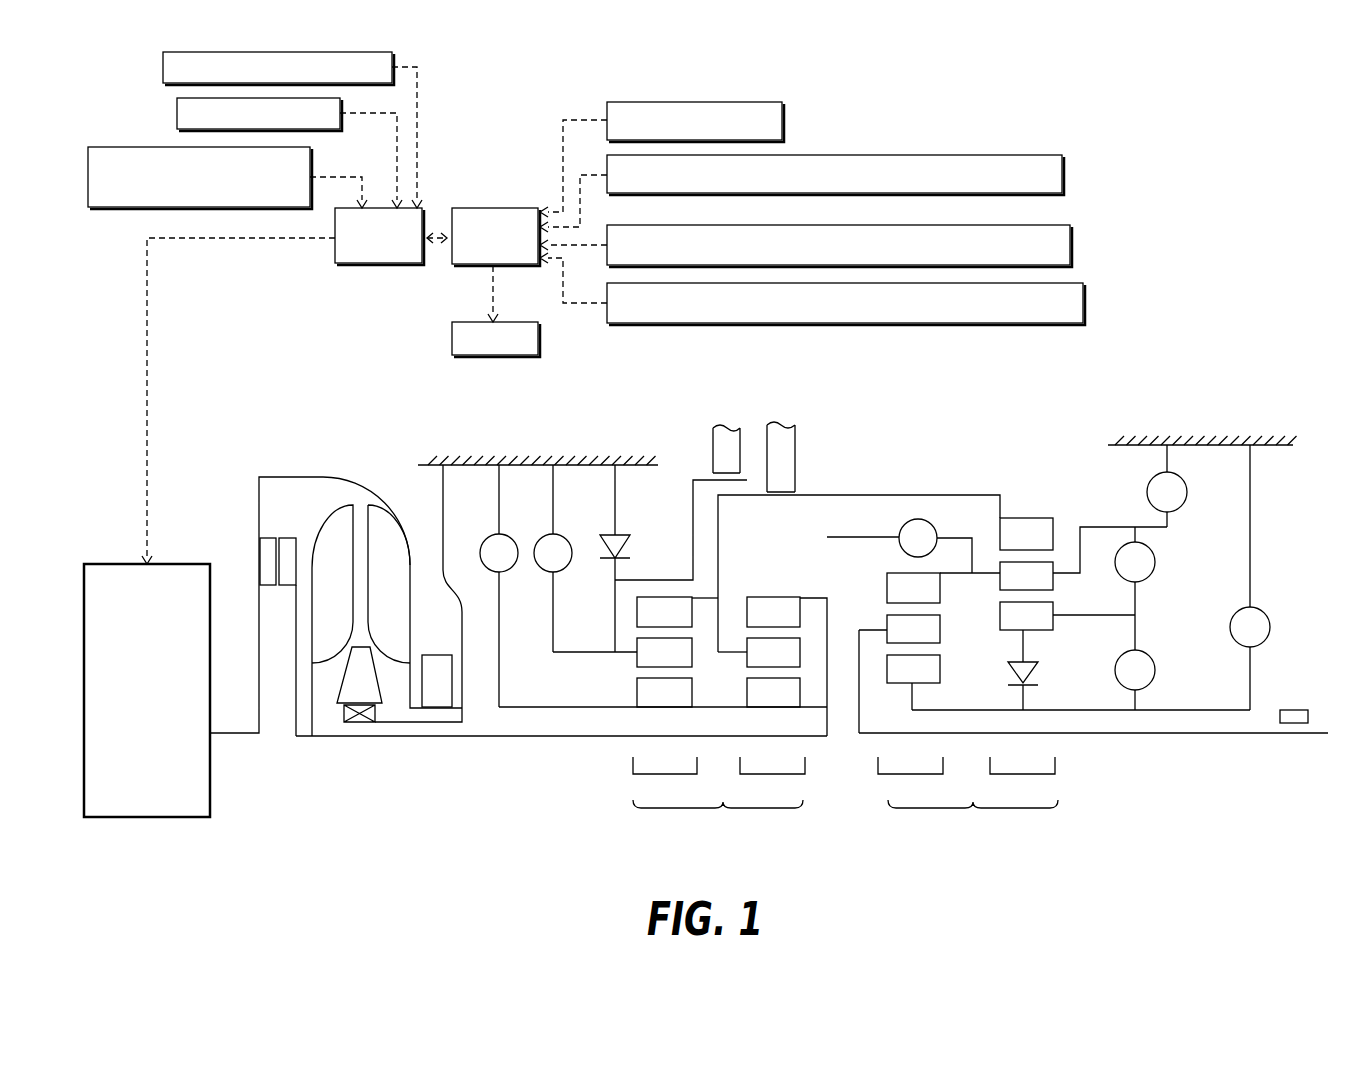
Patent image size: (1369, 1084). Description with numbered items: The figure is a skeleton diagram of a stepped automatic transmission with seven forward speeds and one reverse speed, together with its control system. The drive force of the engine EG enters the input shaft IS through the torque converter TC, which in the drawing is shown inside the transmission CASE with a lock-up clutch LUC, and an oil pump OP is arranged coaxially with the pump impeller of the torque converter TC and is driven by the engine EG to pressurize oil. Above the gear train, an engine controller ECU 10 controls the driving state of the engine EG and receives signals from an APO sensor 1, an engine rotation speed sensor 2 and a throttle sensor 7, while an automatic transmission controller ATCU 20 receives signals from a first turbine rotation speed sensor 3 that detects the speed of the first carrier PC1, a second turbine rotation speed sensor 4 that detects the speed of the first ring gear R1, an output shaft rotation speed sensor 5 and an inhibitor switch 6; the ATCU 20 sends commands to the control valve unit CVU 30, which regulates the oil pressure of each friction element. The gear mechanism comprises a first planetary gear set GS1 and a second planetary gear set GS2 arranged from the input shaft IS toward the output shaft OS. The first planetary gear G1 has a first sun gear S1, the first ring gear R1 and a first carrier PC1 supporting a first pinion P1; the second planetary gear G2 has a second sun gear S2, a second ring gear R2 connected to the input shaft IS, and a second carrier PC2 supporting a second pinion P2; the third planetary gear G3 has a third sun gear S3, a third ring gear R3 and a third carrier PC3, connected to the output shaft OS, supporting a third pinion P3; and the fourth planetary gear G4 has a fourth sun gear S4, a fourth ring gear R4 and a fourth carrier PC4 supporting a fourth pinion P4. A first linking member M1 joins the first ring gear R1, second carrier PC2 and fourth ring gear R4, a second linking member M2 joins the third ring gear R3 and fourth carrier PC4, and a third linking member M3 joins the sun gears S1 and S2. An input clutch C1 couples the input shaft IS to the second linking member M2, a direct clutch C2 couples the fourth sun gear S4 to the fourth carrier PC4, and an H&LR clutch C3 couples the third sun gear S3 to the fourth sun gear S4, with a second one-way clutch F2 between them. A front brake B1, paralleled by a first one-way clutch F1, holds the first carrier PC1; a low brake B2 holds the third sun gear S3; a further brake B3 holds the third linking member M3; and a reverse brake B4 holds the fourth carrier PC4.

The APO sensor 1 is at (177, 113).
The engine rotation speed sensor 2 is at (88, 175).
The first turbine rotation speed sensor 3 is at (1062, 175).
The second turbine rotation speed sensor 4 is at (1070, 245).
The output shaft rotation speed sensor 5 is at (1083, 303).
The inhibitor switch 6 is at (782, 122).
The throttle sensor 7 is at (163, 70).
The engine controller (ECU) 10 is at (373, 263).
The automatic transmission controller (ATCU) 20 is at (483, 208).
The control valve unit (CVU) 30 is at (463, 355).
The engine EG is at (185, 564).
The torque converter TC is at (354, 464).
The lock-up clutch LUC is at (282, 532).
The oil pump OP is at (440, 655).
The input shaft IS is at (460, 738).
The output shaft OS is at (1158, 735).
The transmission case CASE is at (515, 470).
The front brake B1 is at (553, 558).
The low brake B2 is at (1250, 577).
The 2346 brake B3 is at (499, 586).
The reverse brake B4 is at (1167, 486).
The input clutch C1 is at (899, 546).
The direct clutch C2 is at (1135, 588).
The H&LR clutch C3 is at (1135, 680).
The first one-way clutch F1 is at (626, 532).
The second one-way clutch F2 is at (1038, 668).
The first ring gear R1 is at (677, 612).
The second ring gear R2 is at (787, 666).
The third ring gear R3 is at (913, 588).
The fourth ring gear R4 is at (1026, 534).
The first pinion P1 is at (664, 652).
The second pinion P2 is at (773, 652).
The third pinion P3 is at (913, 629).
The fourth pinion P4 is at (1026, 576).
The first sun gear S1 is at (664, 692).
The second sun gear S2 is at (773, 692).
The third sun gear S3 is at (913, 682).
The fourth sun gear S4 is at (1067, 616).
The first carrier PC1 is at (627, 653).
The second carrier PC2 is at (718, 653).
The third carrier PC3 is at (870, 628).
The fourth carrier PC4 is at (1070, 577).
The first linking member M1 is at (908, 493).
The second linking member M2 is at (958, 577).
The third linking member M3 is at (720, 708).
The first planetary gear G1 is at (665, 779).
The second planetary gear G2 is at (772, 779).
The third planetary gear G3 is at (910, 778).
The fourth planetary gear G4 is at (1022, 778).
The first planetary gear set GS1 is at (718, 822).
The second planetary gear set GS2 is at (973, 822).